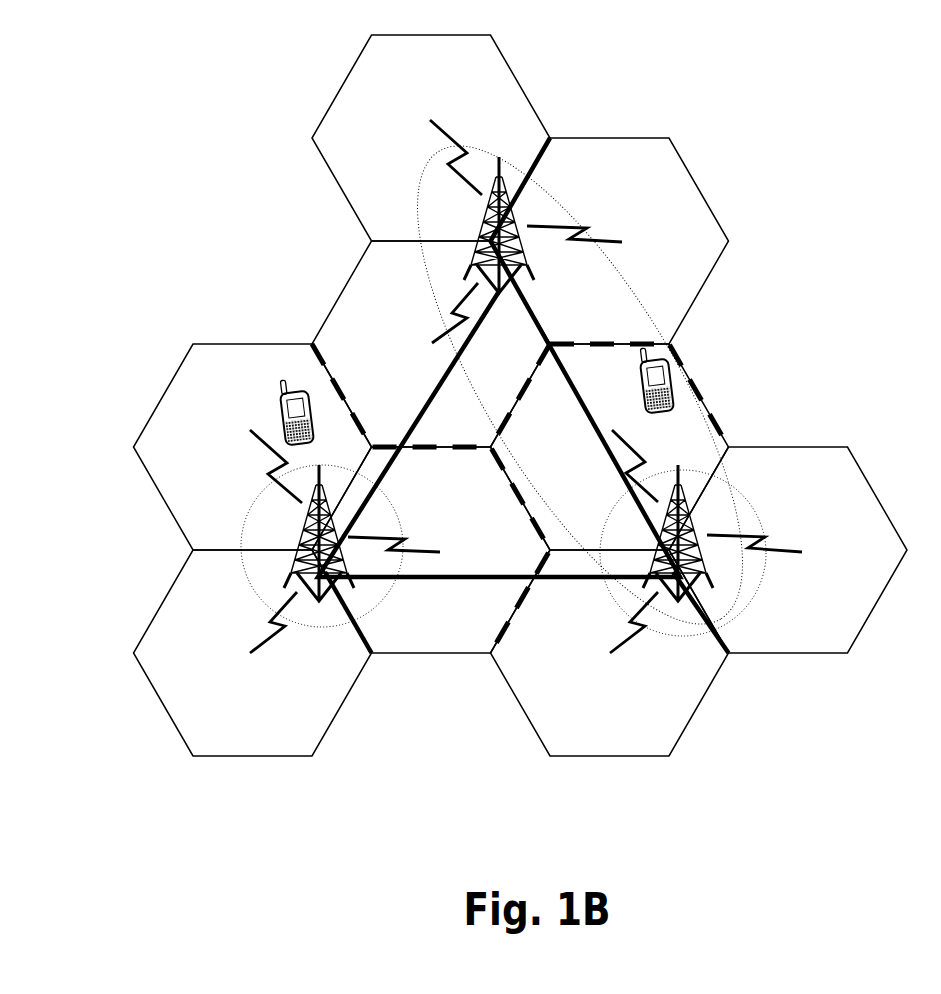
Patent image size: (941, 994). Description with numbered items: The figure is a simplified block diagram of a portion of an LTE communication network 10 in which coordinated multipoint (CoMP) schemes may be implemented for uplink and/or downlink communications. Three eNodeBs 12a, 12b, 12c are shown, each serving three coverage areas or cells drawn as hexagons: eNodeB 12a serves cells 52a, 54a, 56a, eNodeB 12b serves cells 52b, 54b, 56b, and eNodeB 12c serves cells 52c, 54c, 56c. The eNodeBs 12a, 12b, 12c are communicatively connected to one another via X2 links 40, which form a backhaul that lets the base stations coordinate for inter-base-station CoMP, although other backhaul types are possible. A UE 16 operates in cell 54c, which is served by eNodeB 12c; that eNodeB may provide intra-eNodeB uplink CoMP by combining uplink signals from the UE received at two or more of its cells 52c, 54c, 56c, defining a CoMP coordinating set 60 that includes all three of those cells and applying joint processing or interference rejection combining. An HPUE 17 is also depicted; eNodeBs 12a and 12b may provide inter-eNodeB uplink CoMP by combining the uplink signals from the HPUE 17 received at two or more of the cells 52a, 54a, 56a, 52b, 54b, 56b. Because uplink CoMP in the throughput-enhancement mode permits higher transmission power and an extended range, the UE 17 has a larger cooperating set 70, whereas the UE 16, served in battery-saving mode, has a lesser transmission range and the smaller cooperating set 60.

The communication network 10 is at (245, 96).
The eNodeB 12a is at (517, 255).
The eNodeB 12b is at (705, 567).
The eNodeB 12c is at (295, 567).
The UE 16 is at (286, 384).
The HPUE 17 is at (673, 408).
The X2 links 40 is at (444, 378).
The cell 52a is at (598, 167).
The cell 52b is at (781, 477).
The cell 52c is at (413, 484).
The cell 54a is at (415, 64).
The cell 54b is at (596, 372).
The cell 54c is at (229, 372).
The cell 56a is at (411, 266).
The cell 56b is at (599, 752).
The cell 56c is at (233, 752).
The CoMP coordinating set 60 is at (388, 590).
The cooperating set 70 is at (622, 278).